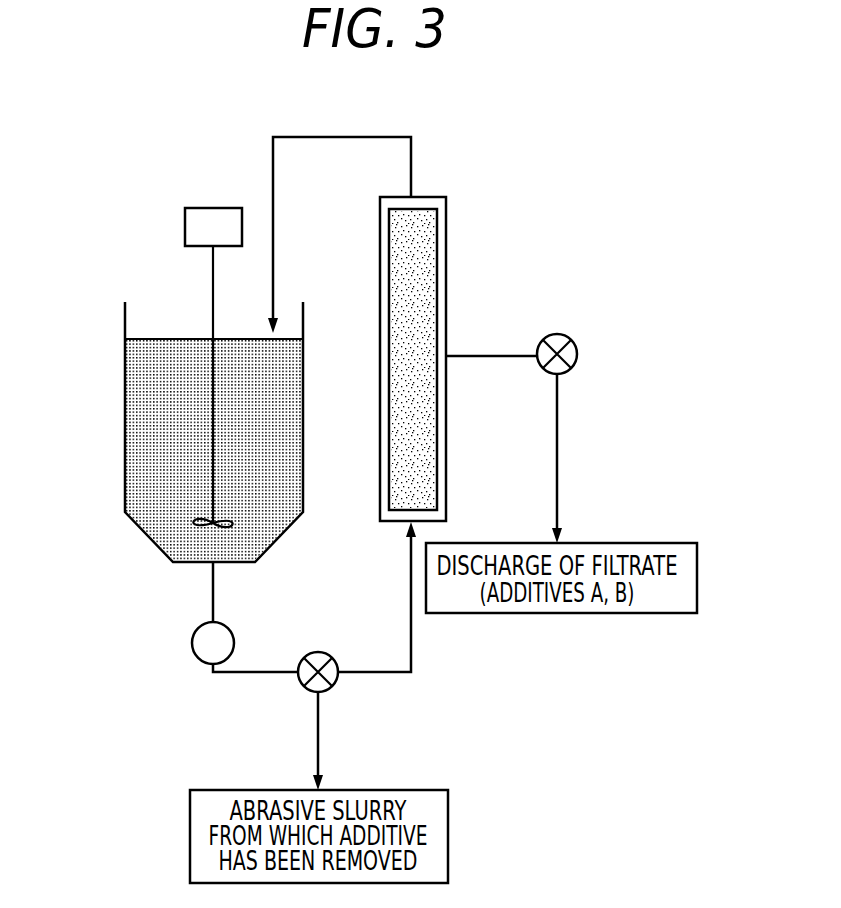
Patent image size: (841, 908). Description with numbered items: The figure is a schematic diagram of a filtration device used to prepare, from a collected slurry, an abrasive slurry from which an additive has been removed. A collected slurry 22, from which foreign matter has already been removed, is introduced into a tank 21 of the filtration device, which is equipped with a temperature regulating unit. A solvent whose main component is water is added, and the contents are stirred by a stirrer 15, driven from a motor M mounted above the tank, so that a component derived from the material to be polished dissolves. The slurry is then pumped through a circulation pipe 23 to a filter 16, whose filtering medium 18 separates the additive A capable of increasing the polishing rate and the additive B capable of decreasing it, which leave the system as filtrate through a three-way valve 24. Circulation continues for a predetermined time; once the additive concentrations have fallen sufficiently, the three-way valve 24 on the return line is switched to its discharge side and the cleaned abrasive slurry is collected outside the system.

The motor M is at (185, 216).
The stirrer 15 is at (213, 291).
The filter 16 is at (446, 221).
The filter medium 18 is at (420, 308).
The tank 21 is at (140, 528).
The collected slurry 22 is at (132, 410).
The circulation pipe 23 is at (273, 157).
The three-way valve 24 is at (575, 342).